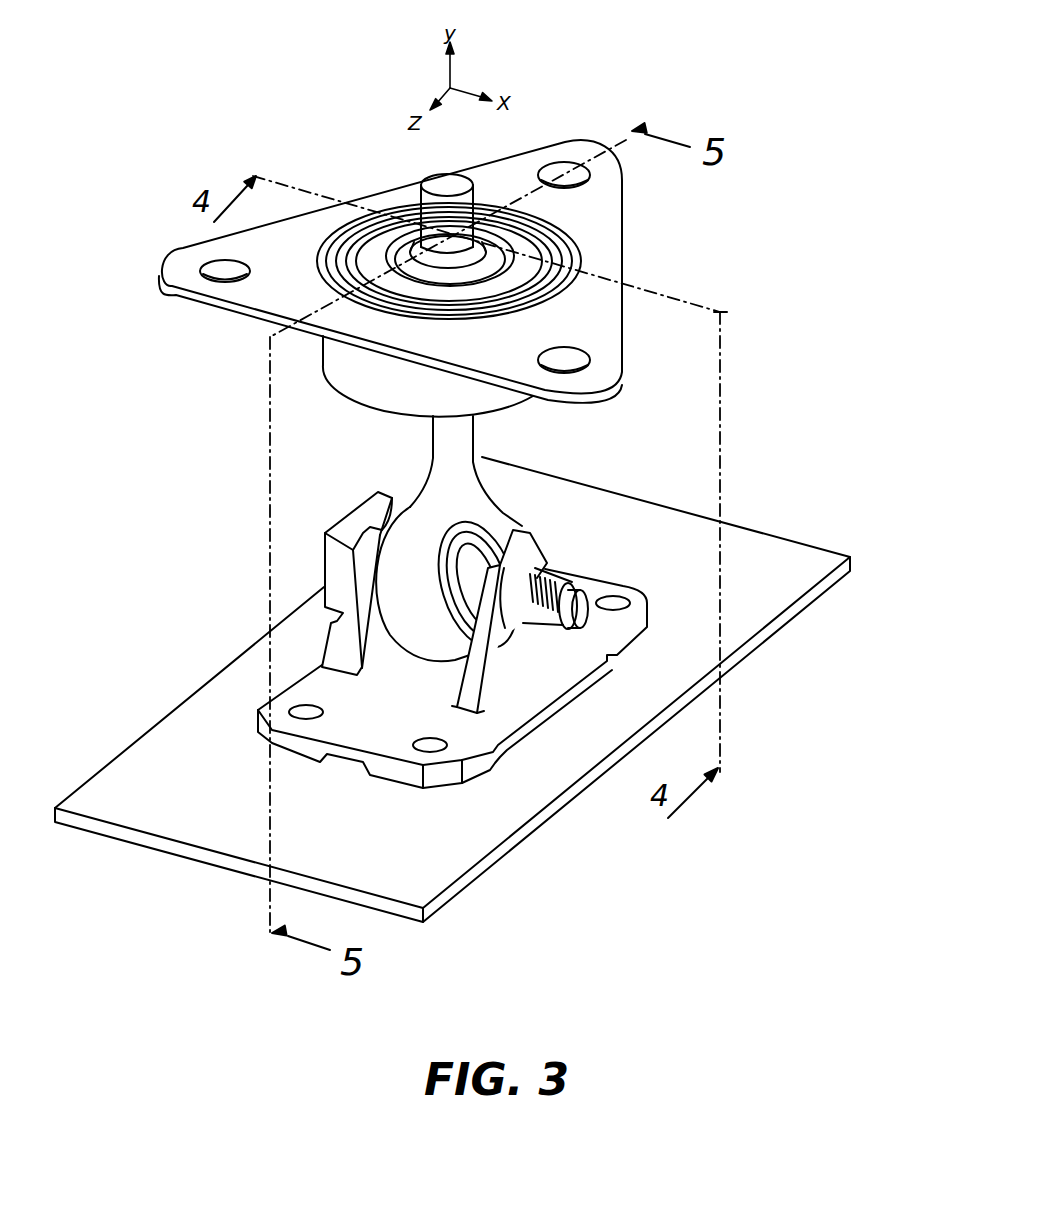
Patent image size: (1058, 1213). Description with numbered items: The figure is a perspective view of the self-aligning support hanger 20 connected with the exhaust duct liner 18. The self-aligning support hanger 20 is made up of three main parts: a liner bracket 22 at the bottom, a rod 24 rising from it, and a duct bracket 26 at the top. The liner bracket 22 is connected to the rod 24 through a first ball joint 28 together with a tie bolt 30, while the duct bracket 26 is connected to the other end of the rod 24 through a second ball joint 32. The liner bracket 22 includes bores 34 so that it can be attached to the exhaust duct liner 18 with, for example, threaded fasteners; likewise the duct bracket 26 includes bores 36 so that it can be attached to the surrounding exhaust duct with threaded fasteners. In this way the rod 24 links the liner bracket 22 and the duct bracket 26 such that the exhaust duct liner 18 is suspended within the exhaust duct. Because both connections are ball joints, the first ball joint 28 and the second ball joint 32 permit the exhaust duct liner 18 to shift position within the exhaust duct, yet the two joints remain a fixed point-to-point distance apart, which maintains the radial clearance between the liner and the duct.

The exhaust duct liner 18 is at (757, 618).
The self-aligning support hanger 20 is at (745, 183).
The liner bracket 22 is at (645, 600).
The rod 24 is at (478, 443).
The duct bracket 26 is at (600, 312).
The first ball joint 28 is at (438, 650).
The tie bolt 30 is at (590, 553).
The second ball joint 32 is at (548, 229).
The bores 34 is at (303, 715).
The bores 36 is at (223, 272).